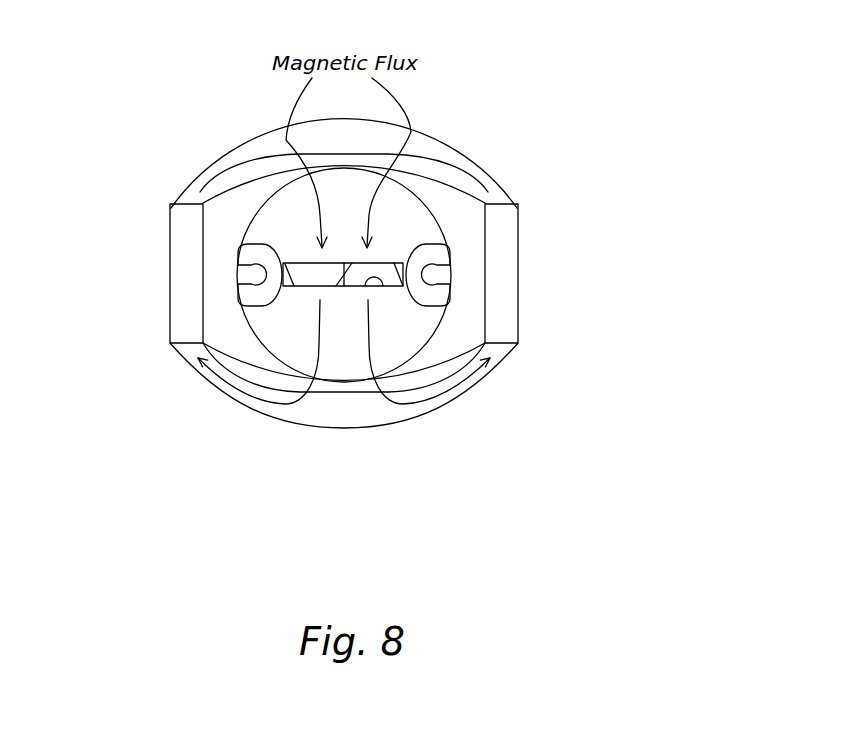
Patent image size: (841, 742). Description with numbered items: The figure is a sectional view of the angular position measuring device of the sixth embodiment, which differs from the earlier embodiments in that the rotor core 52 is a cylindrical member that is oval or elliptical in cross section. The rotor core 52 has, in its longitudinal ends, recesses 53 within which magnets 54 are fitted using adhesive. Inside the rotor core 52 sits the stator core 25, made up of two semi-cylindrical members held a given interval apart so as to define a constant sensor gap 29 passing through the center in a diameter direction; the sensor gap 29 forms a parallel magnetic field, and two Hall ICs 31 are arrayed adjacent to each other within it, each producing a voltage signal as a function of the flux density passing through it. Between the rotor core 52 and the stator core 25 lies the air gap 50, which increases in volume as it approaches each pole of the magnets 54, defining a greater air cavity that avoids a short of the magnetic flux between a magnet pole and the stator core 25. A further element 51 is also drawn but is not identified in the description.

The stator core 25 is at (292, 218).
The sensor gap 29 is at (390, 290).
The Hall ICs 31 is at (480, 178).
The air gap 50 is at (460, 223).
The pole piece 51 is at (258, 247).
The rotor core 52 is at (381, 270).
The recesses 53 is at (183, 333).
The magnets 54 is at (183, 272).